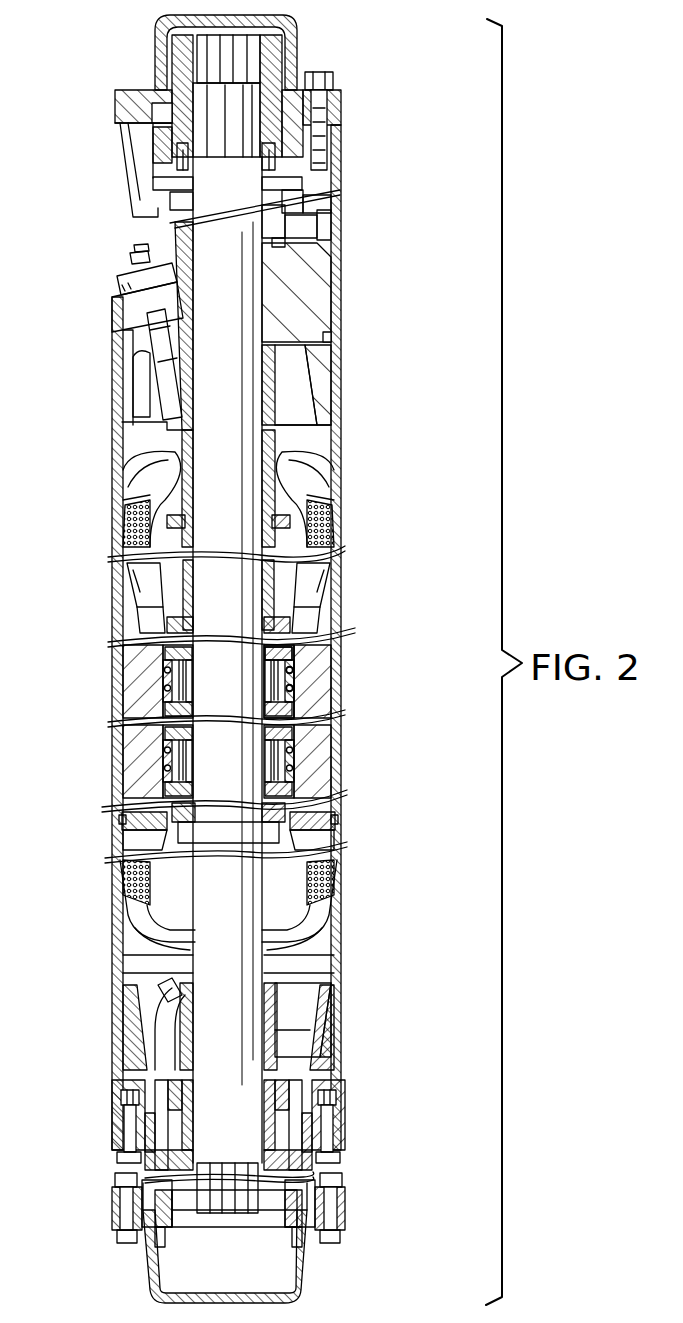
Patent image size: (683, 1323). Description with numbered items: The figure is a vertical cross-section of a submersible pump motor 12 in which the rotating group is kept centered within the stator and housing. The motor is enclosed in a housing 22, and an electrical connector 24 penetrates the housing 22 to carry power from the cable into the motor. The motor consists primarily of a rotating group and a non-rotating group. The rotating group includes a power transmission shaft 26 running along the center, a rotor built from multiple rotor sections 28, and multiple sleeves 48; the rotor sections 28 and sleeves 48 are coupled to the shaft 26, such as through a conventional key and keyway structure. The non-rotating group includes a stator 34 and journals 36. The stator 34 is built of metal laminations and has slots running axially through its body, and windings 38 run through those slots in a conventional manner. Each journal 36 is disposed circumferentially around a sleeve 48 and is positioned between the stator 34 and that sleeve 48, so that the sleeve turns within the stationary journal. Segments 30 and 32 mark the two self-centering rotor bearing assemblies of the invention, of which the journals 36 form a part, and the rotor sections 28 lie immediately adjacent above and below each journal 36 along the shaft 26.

The submersible pump motor 12 is at (85, 505).
The housing 22 is at (340, 438).
The electrical connector 24 is at (132, 264).
The power transmission shaft 26 is at (225, 302).
The rotor sections 28 is at (295, 677).
The segment 30 is at (110, 652).
The segment 32 is at (110, 730).
The stator 34 is at (320, 703).
The journal 36 is at (300, 695).
The windings 38 is at (317, 575).
The sleeves 48 is at (290, 688).